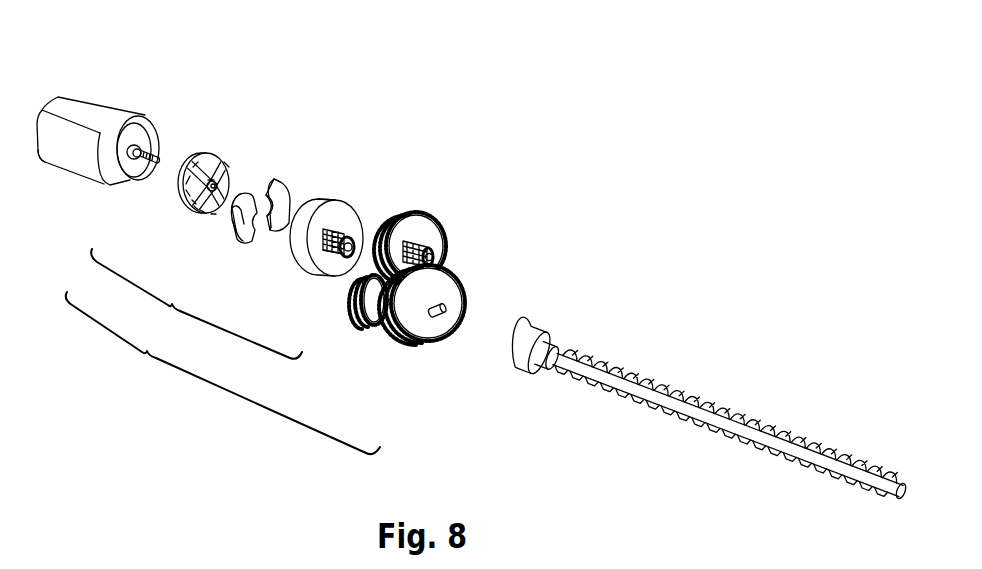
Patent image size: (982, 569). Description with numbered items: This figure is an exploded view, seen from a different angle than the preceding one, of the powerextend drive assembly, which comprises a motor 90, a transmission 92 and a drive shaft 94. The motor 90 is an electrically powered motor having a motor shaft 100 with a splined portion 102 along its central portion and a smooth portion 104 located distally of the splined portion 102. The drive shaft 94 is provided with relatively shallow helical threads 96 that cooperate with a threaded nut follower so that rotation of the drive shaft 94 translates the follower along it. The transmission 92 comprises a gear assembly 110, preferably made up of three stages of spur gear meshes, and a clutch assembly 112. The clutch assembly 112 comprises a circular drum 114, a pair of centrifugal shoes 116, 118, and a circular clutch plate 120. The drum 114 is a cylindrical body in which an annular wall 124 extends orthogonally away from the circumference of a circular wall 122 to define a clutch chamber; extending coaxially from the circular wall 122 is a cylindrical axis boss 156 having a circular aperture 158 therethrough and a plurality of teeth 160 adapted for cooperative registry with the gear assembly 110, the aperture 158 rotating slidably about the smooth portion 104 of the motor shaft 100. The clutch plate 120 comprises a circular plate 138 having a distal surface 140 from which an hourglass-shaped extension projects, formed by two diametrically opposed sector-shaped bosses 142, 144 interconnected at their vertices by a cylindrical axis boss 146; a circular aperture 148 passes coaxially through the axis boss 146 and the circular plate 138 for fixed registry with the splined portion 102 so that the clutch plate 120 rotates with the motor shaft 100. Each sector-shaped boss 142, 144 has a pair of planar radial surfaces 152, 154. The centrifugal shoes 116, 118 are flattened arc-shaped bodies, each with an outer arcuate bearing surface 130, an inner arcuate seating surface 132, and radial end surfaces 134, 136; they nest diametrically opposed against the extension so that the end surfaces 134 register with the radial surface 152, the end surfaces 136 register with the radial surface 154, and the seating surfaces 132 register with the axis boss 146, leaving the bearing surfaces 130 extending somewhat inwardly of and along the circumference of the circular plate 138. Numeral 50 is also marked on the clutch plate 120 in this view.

The motor 90 is at (92, 105).
The motor shaft 100 is at (100, 172).
The splined portion 102 is at (143, 148).
The smooth portion 104 is at (158, 156).
The cam disc 50 is at (187, 168).
The planar radial surface 152 is at (198, 156).
The sector-shaped boss 142 is at (213, 158).
The cylindrical axis boss 146 is at (229, 165).
The circular plate 138 is at (186, 187).
The distal surface 140 is at (184, 195).
The clutch plate 120 is at (190, 202).
The circular aperture 148 is at (192, 207).
The planar radial surface 154 is at (198, 209).
The sector-shaped boss 144 is at (212, 217).
The centrifugal shoe 116 is at (246, 243).
The outer arcuate bearing surface 130 is at (232, 238).
The centrifugal shoe 118 is at (281, 233).
The inner arcuate seating surface 132 is at (264, 188).
The radial end surface 134 is at (278, 183).
The radial end surface 136 is at (273, 226).
The circular drum 114 is at (315, 282).
The annular wall 124 is at (325, 203).
The circular wall 122 is at (342, 224).
The teeth 160 is at (352, 241).
The cylindrical axis boss 156 is at (337, 256).
The gear assembly 110 is at (452, 217).
The circular aperture 158 is at (356, 240).
The clutch assembly 112 is at (196, 304).
The transmission 92 is at (223, 373).
The drive shaft 94 is at (628, 390).
The helical threads 96 is at (662, 378).